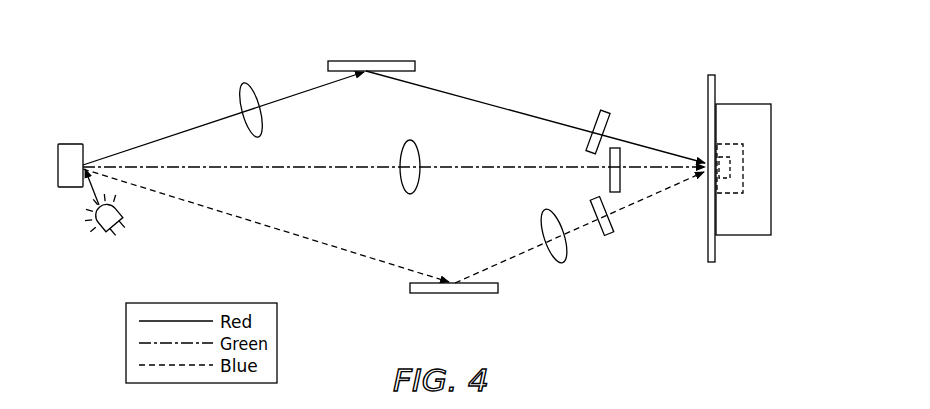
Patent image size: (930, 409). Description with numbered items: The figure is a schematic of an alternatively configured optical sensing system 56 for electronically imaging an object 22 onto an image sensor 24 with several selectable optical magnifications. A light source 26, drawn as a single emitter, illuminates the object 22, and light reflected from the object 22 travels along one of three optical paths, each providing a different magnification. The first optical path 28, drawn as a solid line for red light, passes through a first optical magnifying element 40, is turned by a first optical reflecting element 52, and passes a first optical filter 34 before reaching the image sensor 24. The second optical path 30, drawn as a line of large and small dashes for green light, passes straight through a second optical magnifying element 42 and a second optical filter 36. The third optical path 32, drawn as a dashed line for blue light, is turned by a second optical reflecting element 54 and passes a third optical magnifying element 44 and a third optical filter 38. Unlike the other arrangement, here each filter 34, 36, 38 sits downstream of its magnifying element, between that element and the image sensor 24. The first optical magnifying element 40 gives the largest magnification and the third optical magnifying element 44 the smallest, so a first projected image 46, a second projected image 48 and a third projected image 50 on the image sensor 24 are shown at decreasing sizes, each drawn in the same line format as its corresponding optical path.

The object 22 is at (72, 143).
The image sensor 24 is at (711, 75).
The light source 26 is at (102, 233).
The first optical path 28 is at (465, 97).
The second optical path 30 is at (478, 166).
The third optical path 32 is at (318, 241).
The first optical filter 34 is at (603, 110).
The second optical filter 36 is at (617, 148).
The third optical filter 38 is at (608, 237).
The first optical magnifying element 40 is at (246, 83).
The second optical magnifying element 42 is at (410, 140).
The third optical magnifying element 44 is at (560, 265).
The first projected image 46 is at (760, 104).
The second projected image 48 is at (744, 157).
The third projected image 50 is at (731, 169).
The first optical reflecting element 52 is at (348, 60).
The second optical reflecting element 54 is at (465, 294).
The alternatively configured optical sensing system 56 is at (553, 72).